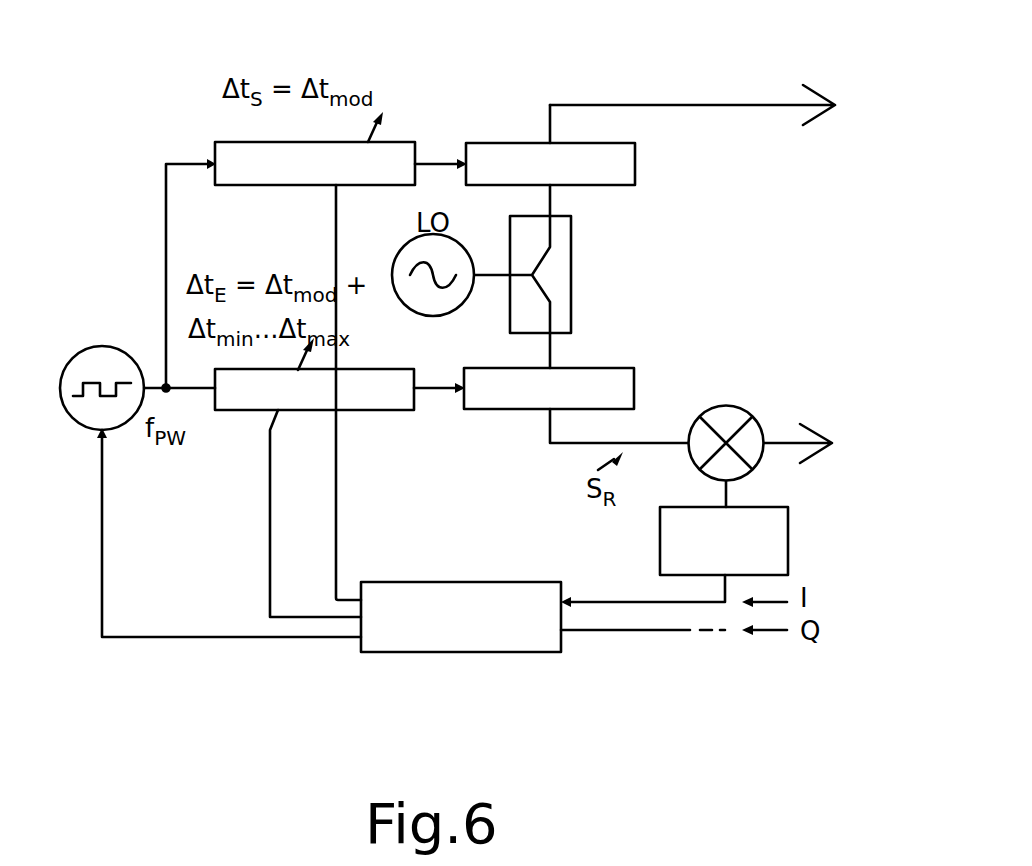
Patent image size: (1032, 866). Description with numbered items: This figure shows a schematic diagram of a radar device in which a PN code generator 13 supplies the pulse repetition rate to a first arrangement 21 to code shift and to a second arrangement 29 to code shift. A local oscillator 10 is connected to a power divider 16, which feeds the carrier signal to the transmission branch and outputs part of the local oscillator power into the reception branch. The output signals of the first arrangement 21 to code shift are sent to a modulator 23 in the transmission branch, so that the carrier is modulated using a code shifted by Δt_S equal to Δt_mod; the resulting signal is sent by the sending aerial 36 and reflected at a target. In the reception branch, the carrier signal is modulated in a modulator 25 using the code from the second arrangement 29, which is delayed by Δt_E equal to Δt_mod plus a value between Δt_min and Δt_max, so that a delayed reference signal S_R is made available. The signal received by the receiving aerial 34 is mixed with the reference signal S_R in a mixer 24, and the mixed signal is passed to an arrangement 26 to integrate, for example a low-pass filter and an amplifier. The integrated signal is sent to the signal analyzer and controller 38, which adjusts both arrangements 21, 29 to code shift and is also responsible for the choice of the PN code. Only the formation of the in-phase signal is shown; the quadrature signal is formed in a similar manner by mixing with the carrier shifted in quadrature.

The first arrangement to code shift 21 is at (215, 143).
The modulator 23 is at (635, 160).
The power divider 16 is at (571, 257).
The local oscillator 10 is at (396, 286).
The second arrangement to code shift 29 is at (237, 410).
The PN code generator 13 is at (80, 415).
The modulator 25 is at (632, 368).
The mixer 24 is at (746, 414).
The receiving aerial 34 is at (830, 432).
The sending aerial 36 is at (830, 92).
The arrangement to integrate 26 is at (788, 533).
The signal analyzer and controller 38 is at (475, 642).